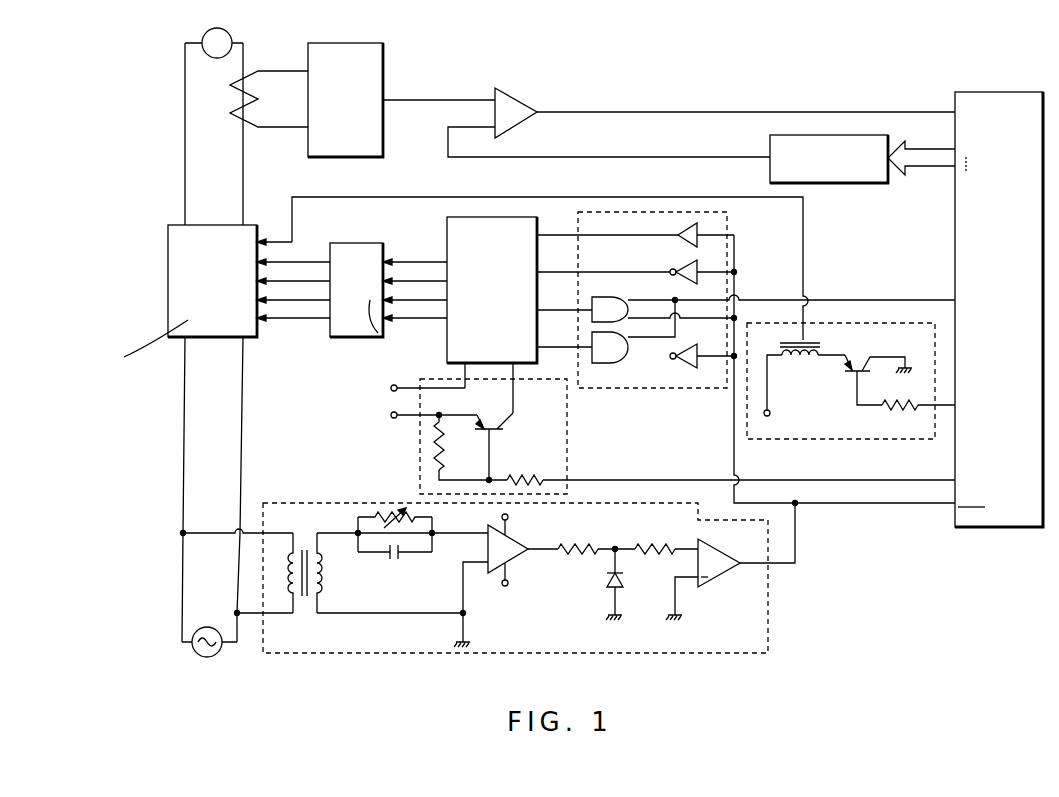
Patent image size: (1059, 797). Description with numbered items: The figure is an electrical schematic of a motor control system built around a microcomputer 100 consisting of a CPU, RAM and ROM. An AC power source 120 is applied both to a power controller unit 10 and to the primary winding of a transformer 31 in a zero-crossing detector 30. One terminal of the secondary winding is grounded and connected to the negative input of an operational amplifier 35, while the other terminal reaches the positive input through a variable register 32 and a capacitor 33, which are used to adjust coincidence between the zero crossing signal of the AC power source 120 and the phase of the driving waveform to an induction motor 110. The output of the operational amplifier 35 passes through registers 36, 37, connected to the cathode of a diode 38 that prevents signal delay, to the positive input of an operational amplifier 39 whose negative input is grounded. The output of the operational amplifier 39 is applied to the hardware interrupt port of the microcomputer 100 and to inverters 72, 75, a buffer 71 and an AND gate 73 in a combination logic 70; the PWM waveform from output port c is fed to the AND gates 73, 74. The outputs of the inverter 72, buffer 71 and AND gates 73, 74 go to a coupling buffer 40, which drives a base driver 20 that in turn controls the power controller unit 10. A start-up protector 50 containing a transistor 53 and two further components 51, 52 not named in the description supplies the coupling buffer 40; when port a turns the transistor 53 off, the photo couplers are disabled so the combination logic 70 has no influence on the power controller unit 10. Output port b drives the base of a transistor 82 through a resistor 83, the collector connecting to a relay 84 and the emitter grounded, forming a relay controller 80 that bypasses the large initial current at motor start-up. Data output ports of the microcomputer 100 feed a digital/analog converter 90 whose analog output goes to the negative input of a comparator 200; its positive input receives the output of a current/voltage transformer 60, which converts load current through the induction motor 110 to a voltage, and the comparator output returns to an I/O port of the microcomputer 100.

The power controller unit 10 is at (168, 285).
The base driver unit 20 is at (360, 243).
The detector 30 is at (341, 503).
The transformer 31 is at (313, 529).
The variable register 32 is at (398, 520).
The capacitor 33 is at (402, 558).
The operational amplifier 35 is at (516, 560).
The register 36 is at (575, 542).
The register 37 is at (651, 542).
The diode 38 is at (624, 579).
The operational amplifier 39 is at (722, 578).
The coupling buffer 40 is at (447, 232).
The start-up protector 50 is at (567, 436).
The resistor 51 is at (445, 447).
The resistor 52 is at (523, 473).
The transistor 53 is at (487, 417).
The current/voltage transformer 60 is at (343, 43).
The combination logic 70 is at (655, 390).
The buffer 71 is at (699, 242).
The inverter 72 is at (692, 367).
The AND gate 73 is at (608, 363).
The AND gate 74 is at (610, 297).
The inverter 75 is at (699, 280).
The relay controller 80 is at (838, 440).
The transistor 82 is at (858, 358).
The resistor 83 is at (898, 411).
The relay 84 is at (800, 366).
The digital/analog converter 90 is at (852, 184).
The microcomputer 100 is at (996, 92).
The induction motor 110 is at (203, 39).
The AC power source 120 is at (205, 626).
The comparator 200 is at (509, 96).